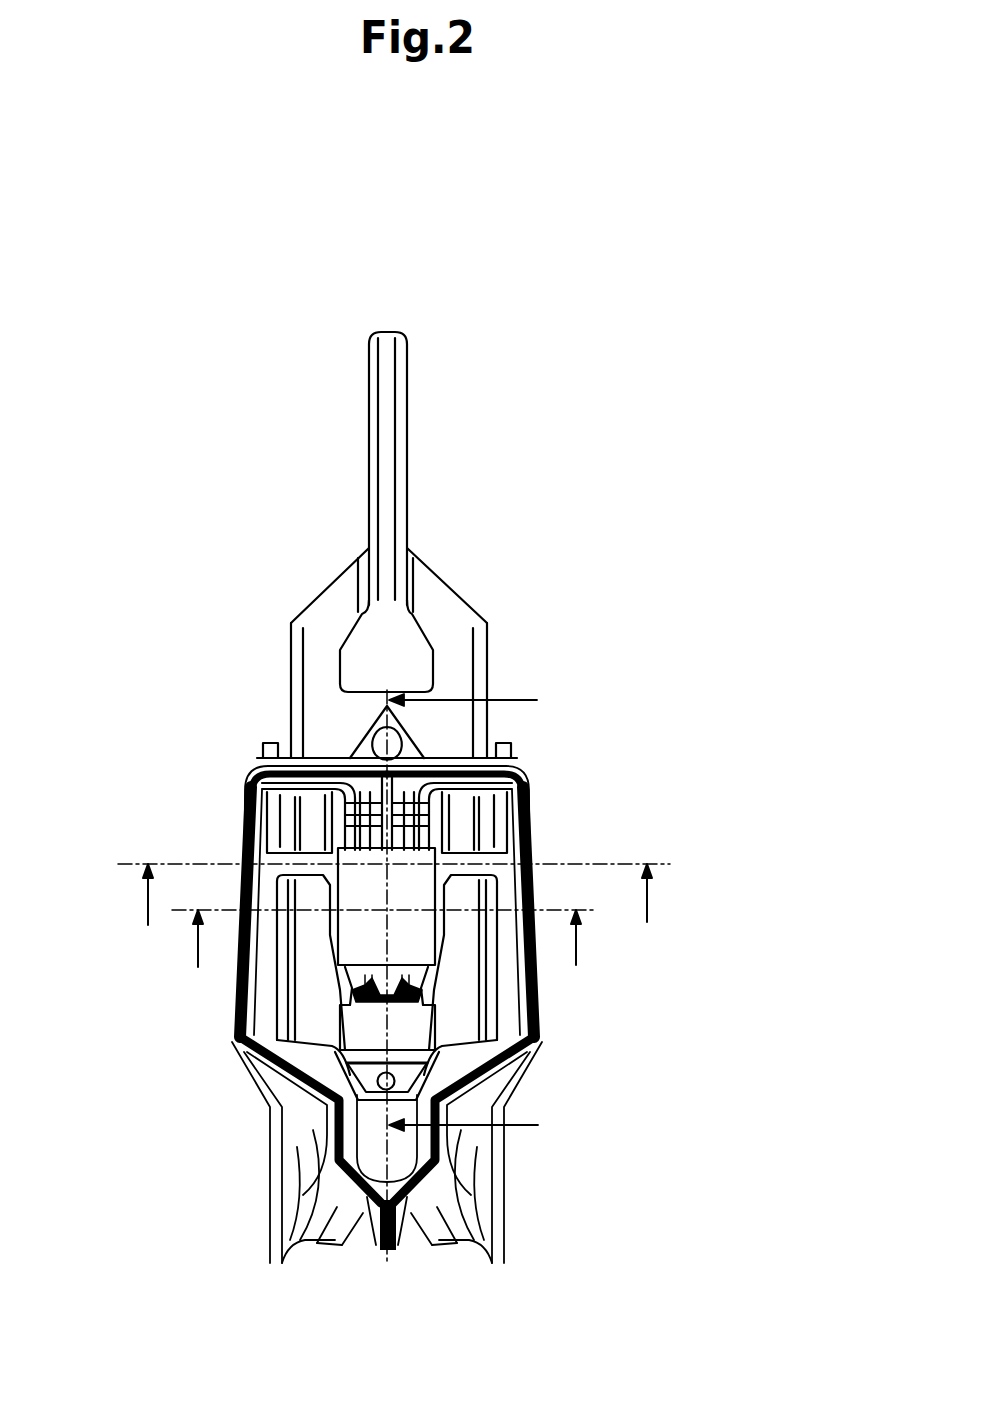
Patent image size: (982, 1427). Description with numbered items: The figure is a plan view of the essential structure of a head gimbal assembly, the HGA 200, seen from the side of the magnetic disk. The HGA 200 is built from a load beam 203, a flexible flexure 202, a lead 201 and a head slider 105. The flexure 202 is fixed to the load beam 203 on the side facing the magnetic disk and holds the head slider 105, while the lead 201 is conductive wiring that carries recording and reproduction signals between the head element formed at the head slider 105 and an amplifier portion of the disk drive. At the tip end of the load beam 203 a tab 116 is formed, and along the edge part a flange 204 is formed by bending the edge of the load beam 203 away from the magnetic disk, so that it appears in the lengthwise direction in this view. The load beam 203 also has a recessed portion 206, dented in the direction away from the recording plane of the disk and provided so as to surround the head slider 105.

The HGA 200 is at (553, 332).
The tab 116 is at (393, 482).
The load beam 203 is at (433, 608).
The flange 204 is at (293, 655).
The lead 201 is at (242, 810).
The flexure 202 is at (537, 853).
The head slider 105 is at (367, 932).
The recessed portion 206 is at (445, 930).